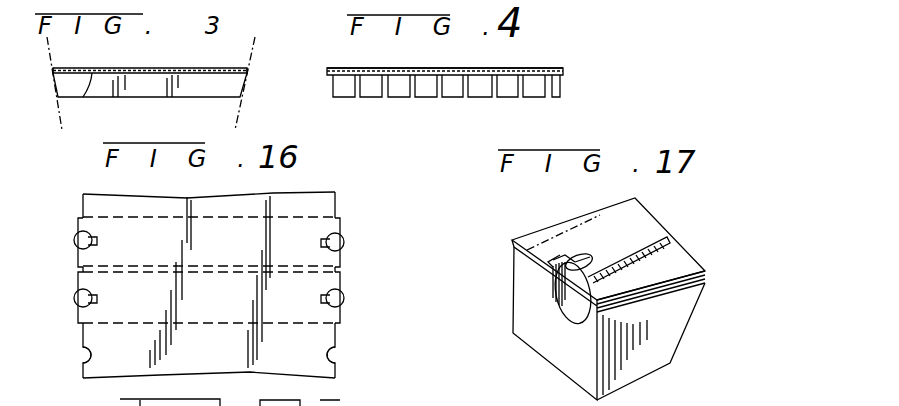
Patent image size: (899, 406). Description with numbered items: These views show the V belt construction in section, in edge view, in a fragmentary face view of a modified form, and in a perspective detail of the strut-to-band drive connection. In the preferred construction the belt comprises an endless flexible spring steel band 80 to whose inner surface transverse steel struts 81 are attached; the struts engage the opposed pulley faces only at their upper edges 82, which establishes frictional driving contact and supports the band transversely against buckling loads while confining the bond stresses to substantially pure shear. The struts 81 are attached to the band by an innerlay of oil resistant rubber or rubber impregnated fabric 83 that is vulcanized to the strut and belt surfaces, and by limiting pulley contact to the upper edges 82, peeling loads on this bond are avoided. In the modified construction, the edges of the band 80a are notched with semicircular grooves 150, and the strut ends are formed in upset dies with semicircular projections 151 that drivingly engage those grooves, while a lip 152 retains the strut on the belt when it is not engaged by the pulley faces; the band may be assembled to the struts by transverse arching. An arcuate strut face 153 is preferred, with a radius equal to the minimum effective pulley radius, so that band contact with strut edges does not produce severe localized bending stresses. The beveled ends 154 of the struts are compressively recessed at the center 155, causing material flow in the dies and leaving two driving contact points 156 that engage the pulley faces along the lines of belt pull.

In FIG. 3, the spring steel band 80 is at (177, 70).
In FIG. 4, the spring steel band 80 is at (542, 68).
In FIG. 16, the band 80a is at (322, 205).
In FIG. 17, the band 80a is at (535, 235).
In FIG. 3, the transverse steel struts 81 is at (192, 88).
In FIG. 4, the transverse steel struts 81 is at (535, 88).
In FIG. 3, the upper edges 82 is at (260, 73).
In FIG. 3, the rubber innerlay 83 is at (83, 97).
In FIG. 4, the rubber innerlay 83 is at (563, 72).
In FIG. 16, the semicircular grooves 150 is at (336, 357).
In FIG. 17, the semicircular grooves 150 is at (567, 228).
In FIG. 16, the semicircular projections 151 is at (337, 255).
In FIG. 17, the semicircular projections 151 is at (560, 260).
In FIG. 16, the lip 152 is at (337, 231).
In FIG. 17, the lip 152 is at (590, 257).
In FIG. 17, the arcuate strut face 153 is at (646, 274).
In FIG. 17, the beveled ends 154 is at (550, 342).
In FIG. 16, the center recess 155 is at (340, 242).
In FIG. 17, the center recess 155 is at (568, 303).
In FIG. 17, the driving contact points 156 is at (552, 273).